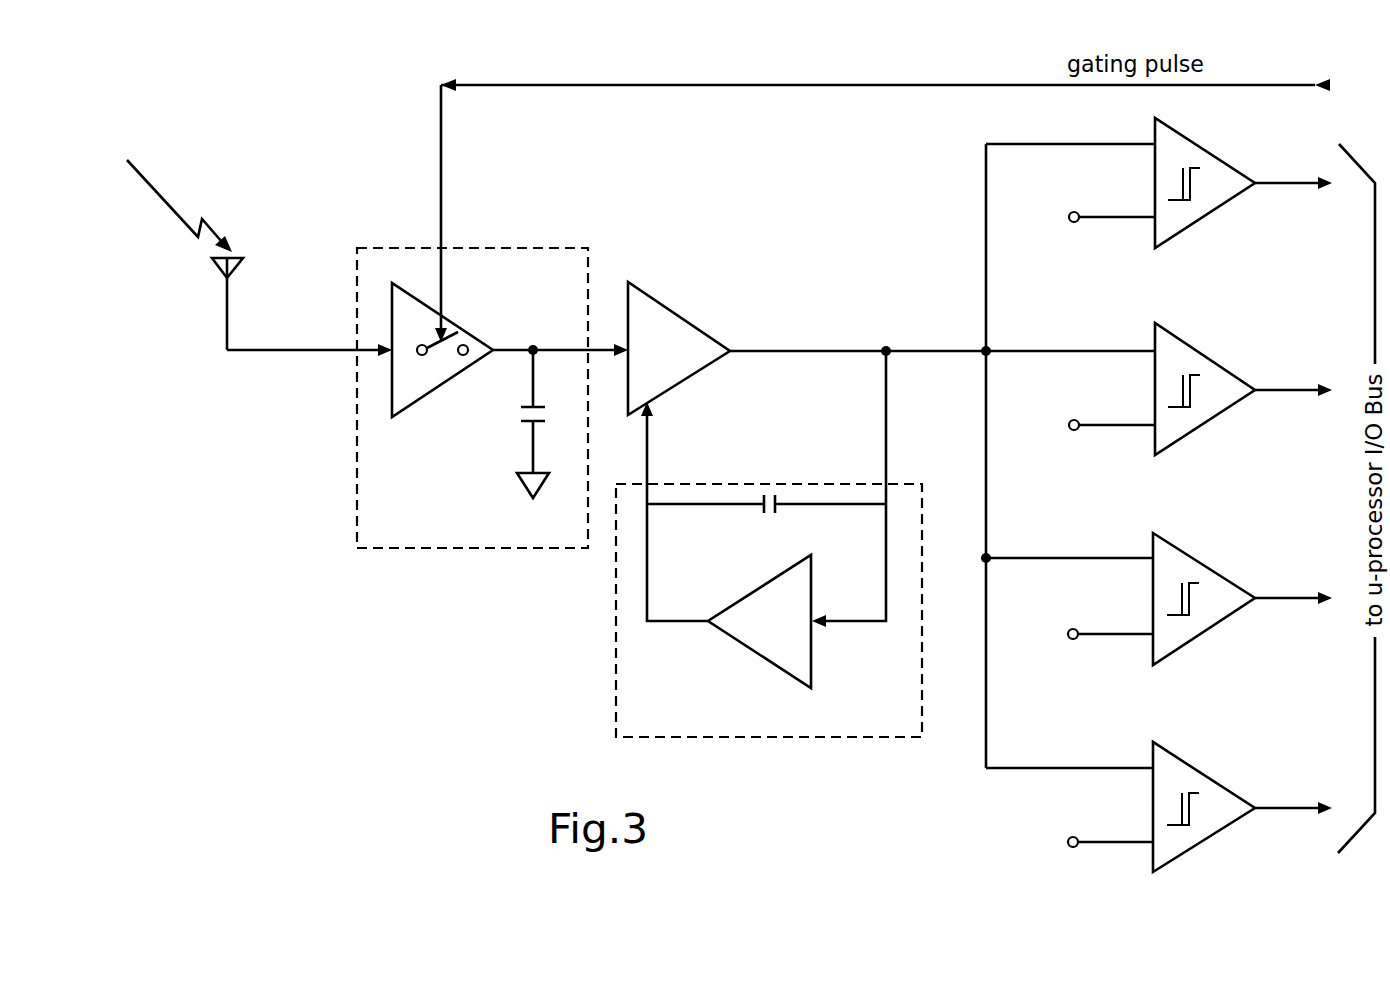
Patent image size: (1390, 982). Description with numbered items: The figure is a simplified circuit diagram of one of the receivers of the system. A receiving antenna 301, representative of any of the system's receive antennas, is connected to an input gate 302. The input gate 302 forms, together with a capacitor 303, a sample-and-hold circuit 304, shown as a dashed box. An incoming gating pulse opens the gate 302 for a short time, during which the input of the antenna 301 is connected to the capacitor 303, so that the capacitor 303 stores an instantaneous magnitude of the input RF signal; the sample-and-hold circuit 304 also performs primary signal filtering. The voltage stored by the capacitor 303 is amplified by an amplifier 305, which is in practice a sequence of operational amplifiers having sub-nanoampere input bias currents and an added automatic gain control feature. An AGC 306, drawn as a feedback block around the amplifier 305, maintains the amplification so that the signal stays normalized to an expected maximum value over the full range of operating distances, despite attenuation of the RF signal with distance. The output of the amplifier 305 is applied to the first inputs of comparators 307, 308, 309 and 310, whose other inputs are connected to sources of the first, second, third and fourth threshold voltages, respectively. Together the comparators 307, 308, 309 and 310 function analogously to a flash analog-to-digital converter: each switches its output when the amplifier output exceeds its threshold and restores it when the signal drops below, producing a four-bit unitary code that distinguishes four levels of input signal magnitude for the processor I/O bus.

The receiving antenna 301 is at (227, 312).
The input gate 302 is at (423, 393).
The capacitor 303 is at (550, 415).
The sample-and-hold circuit 304 is at (357, 508).
The amplifier 305 is at (683, 311).
The AGC 306 is at (616, 649).
The comparator 307 is at (1209, 149).
The comparator 308 is at (1209, 353).
The comparator 309 is at (1207, 562).
The comparator 310 is at (1207, 771).